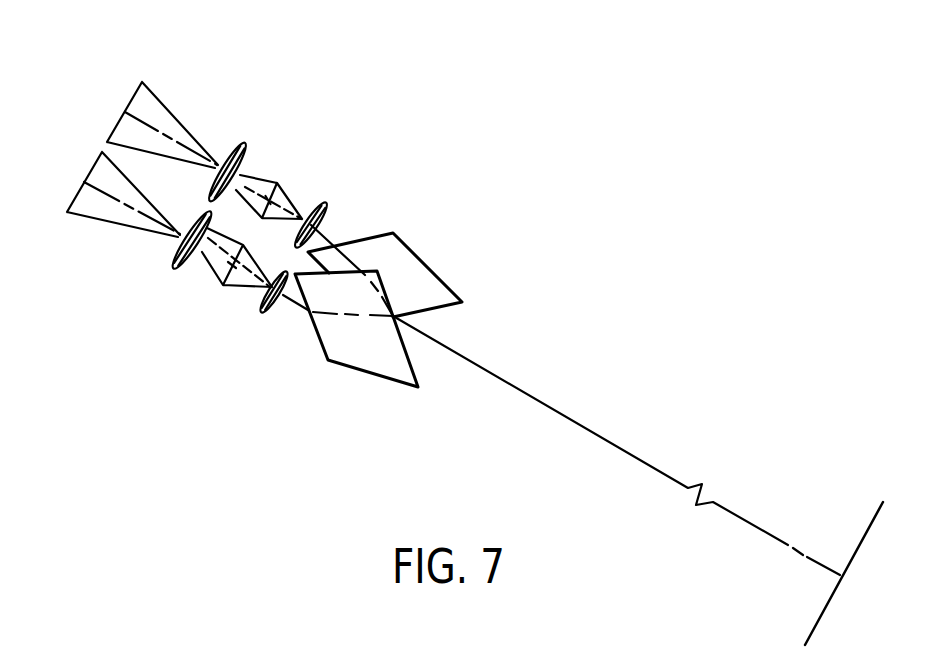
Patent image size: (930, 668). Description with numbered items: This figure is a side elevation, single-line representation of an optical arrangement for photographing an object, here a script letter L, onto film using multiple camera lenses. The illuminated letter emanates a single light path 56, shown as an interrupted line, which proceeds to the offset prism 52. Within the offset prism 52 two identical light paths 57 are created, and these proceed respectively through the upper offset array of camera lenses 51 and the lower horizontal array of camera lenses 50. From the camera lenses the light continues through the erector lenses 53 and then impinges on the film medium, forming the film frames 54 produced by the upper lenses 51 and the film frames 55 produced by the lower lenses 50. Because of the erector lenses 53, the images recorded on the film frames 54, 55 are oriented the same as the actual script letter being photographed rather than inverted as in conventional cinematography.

The lower horizontal array of camera lenses 50 is at (270, 313).
The upper offset array of camera lenses 51 is at (326, 203).
The offset prism 52 is at (453, 288).
The erector lens 53 is at (243, 145).
The film frame 54 is at (130, 102).
The film frame 55 is at (82, 185).
The single light path 56 is at (637, 457).
The identical light paths 57 is at (336, 236).